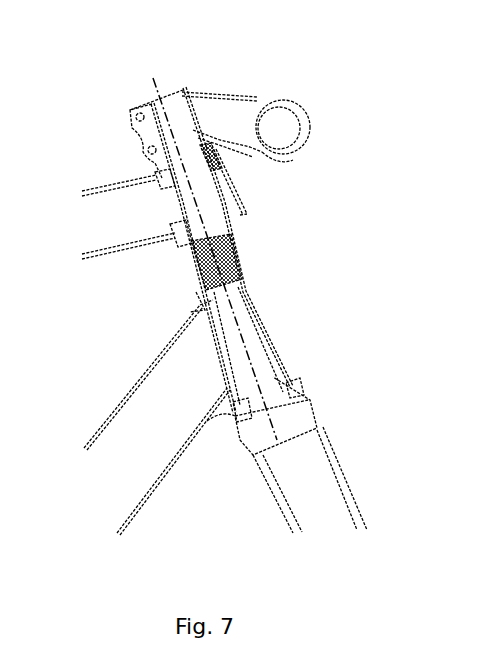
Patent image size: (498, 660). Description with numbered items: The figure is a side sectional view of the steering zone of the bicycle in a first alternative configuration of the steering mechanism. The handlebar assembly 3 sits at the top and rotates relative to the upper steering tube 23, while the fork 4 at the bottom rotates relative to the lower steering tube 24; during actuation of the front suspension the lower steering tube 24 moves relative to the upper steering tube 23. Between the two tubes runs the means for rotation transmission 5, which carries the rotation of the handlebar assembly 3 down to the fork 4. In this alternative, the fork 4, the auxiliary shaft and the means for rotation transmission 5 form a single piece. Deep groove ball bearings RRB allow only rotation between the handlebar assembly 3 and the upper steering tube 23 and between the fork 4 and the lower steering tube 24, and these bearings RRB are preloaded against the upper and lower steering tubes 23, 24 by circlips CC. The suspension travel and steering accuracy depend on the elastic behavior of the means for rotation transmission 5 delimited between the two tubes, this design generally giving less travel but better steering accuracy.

The handlebar assembly 3 is at (259, 77).
The means for rotation transmission 5 is at (247, 250).
The upper steering tube 23 is at (142, 207).
The lower steering tube 24 is at (162, 385).
The fork 4 is at (257, 489).
The deep groove ball bearings RRB is at (213, 159).
The circlips CC is at (193, 248).